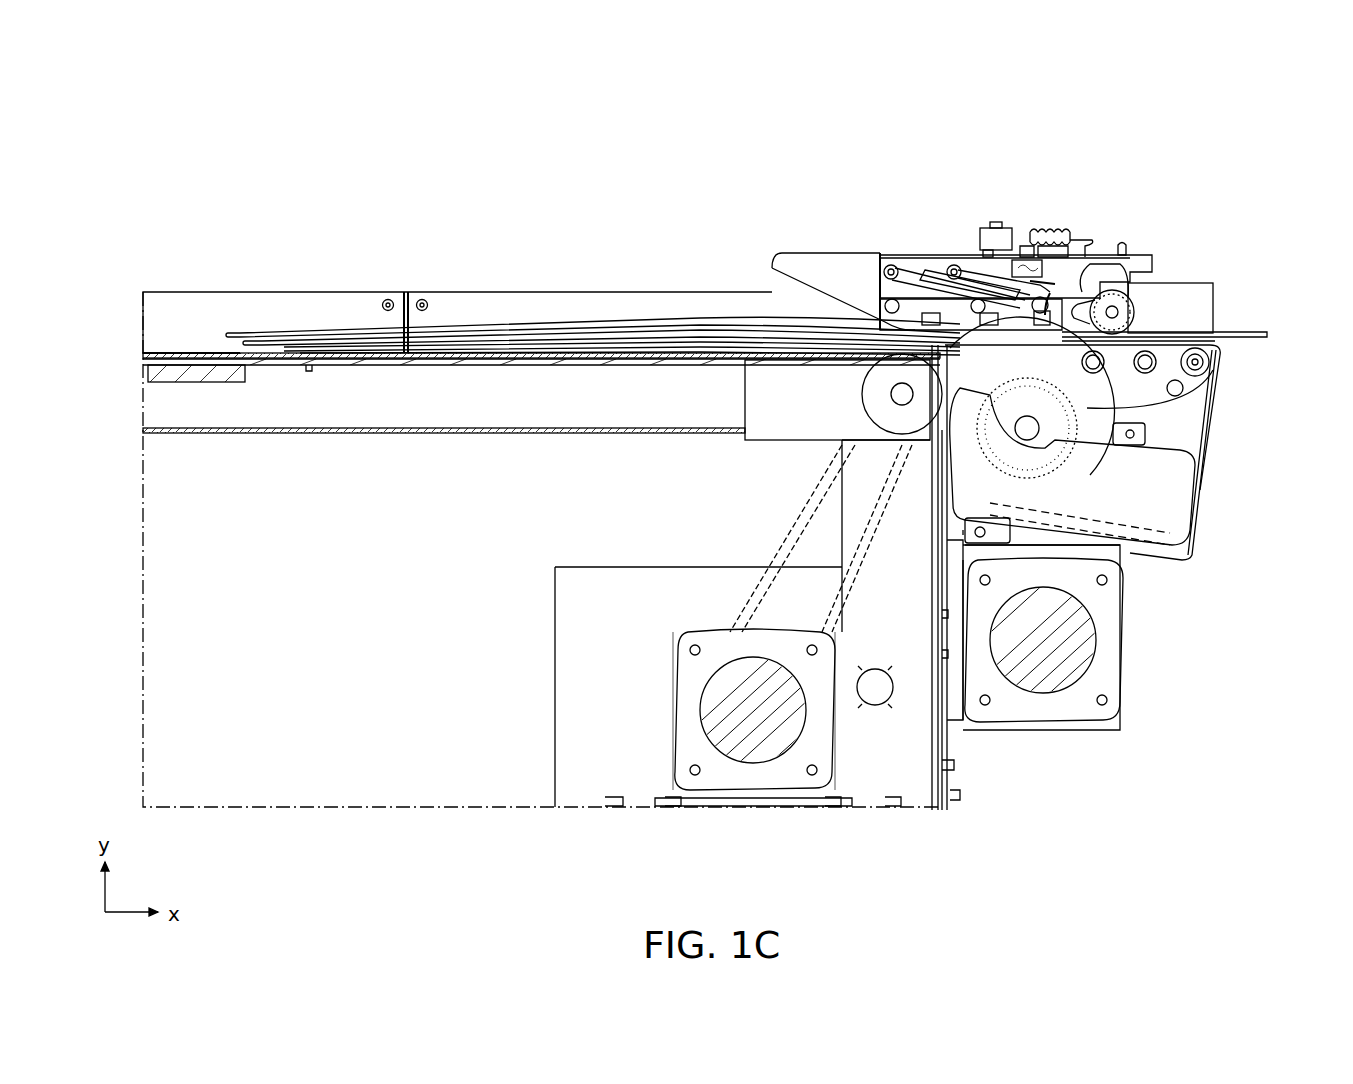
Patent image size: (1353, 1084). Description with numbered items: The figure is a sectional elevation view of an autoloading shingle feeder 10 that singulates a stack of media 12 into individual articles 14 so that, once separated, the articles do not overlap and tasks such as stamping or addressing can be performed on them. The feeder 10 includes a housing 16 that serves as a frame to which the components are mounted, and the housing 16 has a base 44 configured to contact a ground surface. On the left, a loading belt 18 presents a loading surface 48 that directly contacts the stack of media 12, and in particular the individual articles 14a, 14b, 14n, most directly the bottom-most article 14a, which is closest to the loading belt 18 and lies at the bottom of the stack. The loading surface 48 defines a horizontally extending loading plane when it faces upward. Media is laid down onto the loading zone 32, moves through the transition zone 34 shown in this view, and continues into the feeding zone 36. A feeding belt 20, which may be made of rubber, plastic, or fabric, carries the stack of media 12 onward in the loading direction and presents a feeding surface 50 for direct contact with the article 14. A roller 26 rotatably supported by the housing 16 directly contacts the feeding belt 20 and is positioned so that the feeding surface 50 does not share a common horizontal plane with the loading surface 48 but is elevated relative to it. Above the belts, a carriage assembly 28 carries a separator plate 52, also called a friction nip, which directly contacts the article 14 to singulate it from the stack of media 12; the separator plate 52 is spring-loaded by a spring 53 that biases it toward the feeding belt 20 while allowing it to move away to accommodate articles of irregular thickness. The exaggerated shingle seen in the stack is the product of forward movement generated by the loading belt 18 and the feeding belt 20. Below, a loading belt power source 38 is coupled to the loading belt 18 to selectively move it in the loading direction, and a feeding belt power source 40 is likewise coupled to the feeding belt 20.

The autoloading shingle feeder 10 is at (133, 80).
The stack of media 12 is at (373, 183).
The article 14 is at (620, 230).
The bottom-most article 14a is at (1260, 335).
The article 14b is at (290, 350).
The article 14n is at (245, 345).
The housing 16 is at (125, 408).
The loading belt 18 is at (145, 362).
The feeding belt 20 is at (1210, 390).
The roller 26 is at (1212, 336).
The carriage assembly 28 is at (1005, 160).
The loading zone 32 is at (600, 180).
The transition zone 34 is at (1010, 195).
The feeding zone 36 is at (1162, 224).
The loading belt power source 38 is at (790, 770).
The feeding belt power source 40 is at (1100, 680).
The base 44 is at (125, 598).
The loading surface 48 is at (205, 340).
The feeding surface 50 is at (1168, 336).
The separator plate 52 is at (918, 300).
The spring 53 is at (1078, 298).